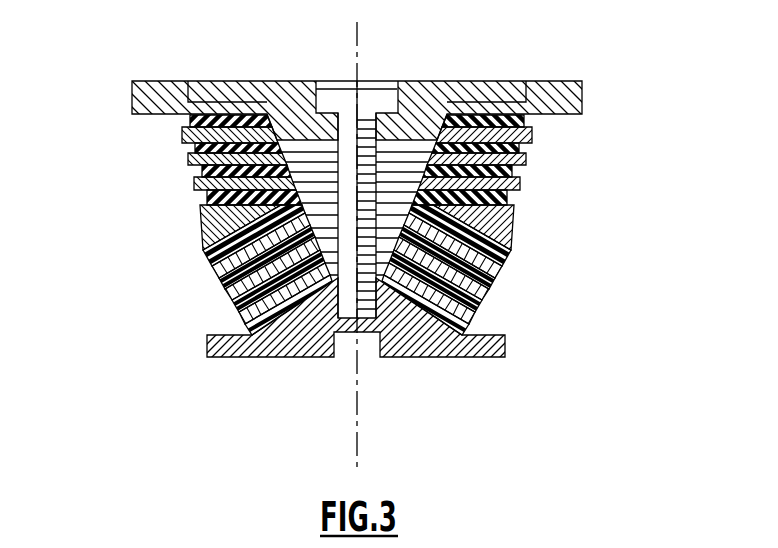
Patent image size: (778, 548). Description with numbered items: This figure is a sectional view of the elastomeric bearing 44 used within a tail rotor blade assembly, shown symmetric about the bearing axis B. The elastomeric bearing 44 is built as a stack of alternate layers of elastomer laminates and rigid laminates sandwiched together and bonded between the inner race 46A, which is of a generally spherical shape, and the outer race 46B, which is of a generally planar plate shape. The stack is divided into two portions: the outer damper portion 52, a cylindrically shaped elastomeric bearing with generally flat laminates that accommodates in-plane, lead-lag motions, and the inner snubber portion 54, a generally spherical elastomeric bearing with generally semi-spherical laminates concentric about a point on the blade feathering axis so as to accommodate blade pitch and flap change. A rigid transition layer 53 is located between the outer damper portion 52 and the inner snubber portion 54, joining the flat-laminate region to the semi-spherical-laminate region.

The elastomeric bearing 44 is at (549, 193).
The inner race 46A is at (500, 352).
The outer race 46B is at (578, 96).
The outer damper portion 52 is at (150, 173).
The rigid transition layer 53 is at (212, 236).
The inner snubber portion 54 is at (244, 269).
The bearing axis B is at (357, 390).